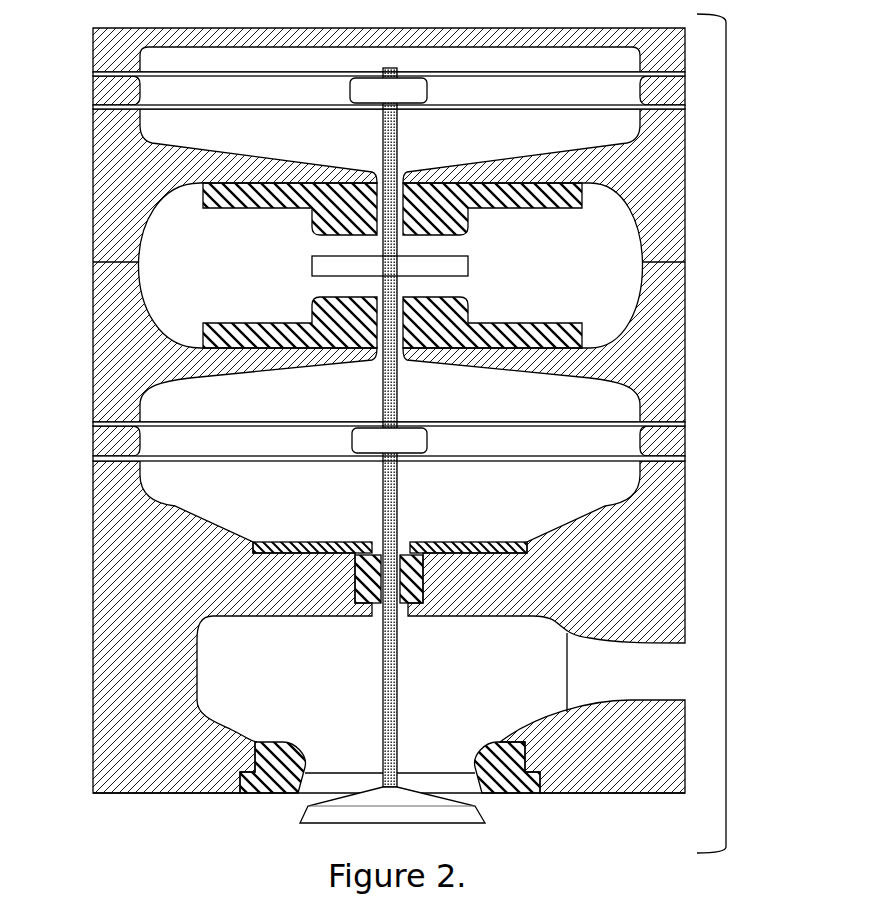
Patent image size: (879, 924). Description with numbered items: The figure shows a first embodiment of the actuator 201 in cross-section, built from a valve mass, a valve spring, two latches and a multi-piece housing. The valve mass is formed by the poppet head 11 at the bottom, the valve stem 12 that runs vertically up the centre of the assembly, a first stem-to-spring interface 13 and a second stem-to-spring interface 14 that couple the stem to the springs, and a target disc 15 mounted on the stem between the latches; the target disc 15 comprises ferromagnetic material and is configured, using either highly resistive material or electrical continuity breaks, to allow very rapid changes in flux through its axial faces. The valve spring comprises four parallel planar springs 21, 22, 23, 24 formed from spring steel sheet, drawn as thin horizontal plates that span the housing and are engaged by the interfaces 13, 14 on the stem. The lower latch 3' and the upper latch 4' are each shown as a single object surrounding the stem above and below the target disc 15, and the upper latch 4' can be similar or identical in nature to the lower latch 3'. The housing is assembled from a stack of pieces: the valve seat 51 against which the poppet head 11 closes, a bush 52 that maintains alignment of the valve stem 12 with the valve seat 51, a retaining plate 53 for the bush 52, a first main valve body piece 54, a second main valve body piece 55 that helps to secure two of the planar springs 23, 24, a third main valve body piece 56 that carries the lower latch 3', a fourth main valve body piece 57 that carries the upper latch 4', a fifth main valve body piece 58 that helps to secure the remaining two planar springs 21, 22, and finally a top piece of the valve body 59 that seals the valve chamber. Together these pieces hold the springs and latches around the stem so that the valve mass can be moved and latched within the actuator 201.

The poppet head 11 is at (473, 815).
The valve stem 12 is at (404, 660).
The first stem-to-spring interface 13 is at (358, 451).
The second stem-to-spring interface 14 is at (355, 95).
The target disc 15 is at (309, 265).
The planar spring 21 is at (497, 72).
The planar spring 22 is at (497, 108).
The planar spring 23 is at (497, 423).
The planar spring 24 is at (497, 459).
The lower latch 3' is at (392, 311).
The upper latch 4' is at (392, 212).
The valve seat 51 is at (274, 763).
The bush 52 is at (362, 591).
The retaining plate 53 is at (313, 554).
The first main valve body piece 54 is at (115, 645).
The second main valve body piece 55 is at (97, 440).
The third main valve body piece 56 is at (97, 332).
The fourth main valve body piece 57 is at (102, 177).
The fifth main valve body piece 58 is at (97, 92).
The top piece of the valve body 59 is at (97, 52).
The actuator 201 is at (726, 433).